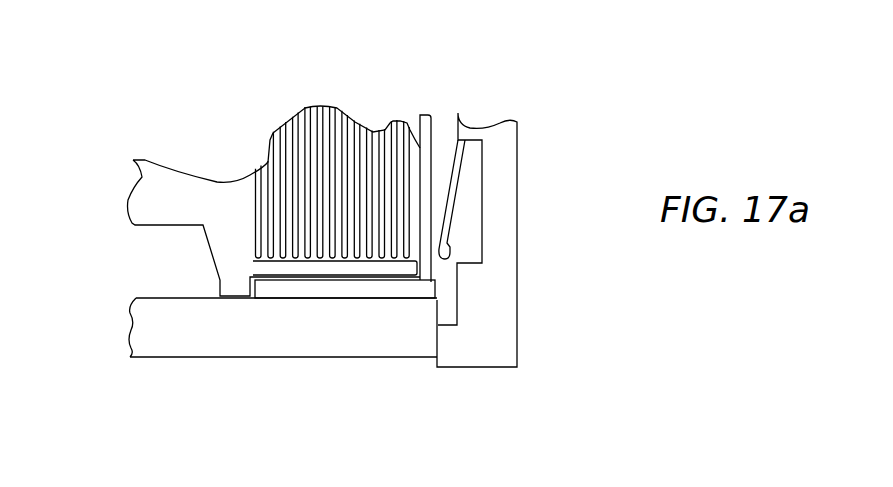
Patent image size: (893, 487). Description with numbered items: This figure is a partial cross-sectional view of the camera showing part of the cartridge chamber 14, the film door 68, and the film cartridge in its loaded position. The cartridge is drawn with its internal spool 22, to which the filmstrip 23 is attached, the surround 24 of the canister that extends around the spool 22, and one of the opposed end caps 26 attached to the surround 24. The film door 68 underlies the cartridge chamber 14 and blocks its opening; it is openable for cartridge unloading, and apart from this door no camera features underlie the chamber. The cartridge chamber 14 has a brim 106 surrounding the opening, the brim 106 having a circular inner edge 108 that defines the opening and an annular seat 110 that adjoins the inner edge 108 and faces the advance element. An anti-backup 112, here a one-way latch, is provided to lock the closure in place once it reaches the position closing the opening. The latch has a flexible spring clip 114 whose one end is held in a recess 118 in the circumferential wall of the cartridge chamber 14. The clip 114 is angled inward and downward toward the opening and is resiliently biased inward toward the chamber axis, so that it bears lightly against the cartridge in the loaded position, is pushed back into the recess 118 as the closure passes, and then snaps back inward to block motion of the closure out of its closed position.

The cartridge chamber 14 is at (497, 114).
The spool 22 is at (178, 170).
The filmstrip 23 is at (290, 119).
The surround 24 is at (420, 148).
The end caps 26 is at (272, 298).
The film door 68 is at (130, 330).
The brim 106 is at (487, 368).
The inner edge 108 is at (437, 339).
The annular seat 110 is at (446, 325).
The anti-backup 112 is at (447, 150).
The spring clips 114 is at (453, 196).
The recess 118 is at (478, 243).